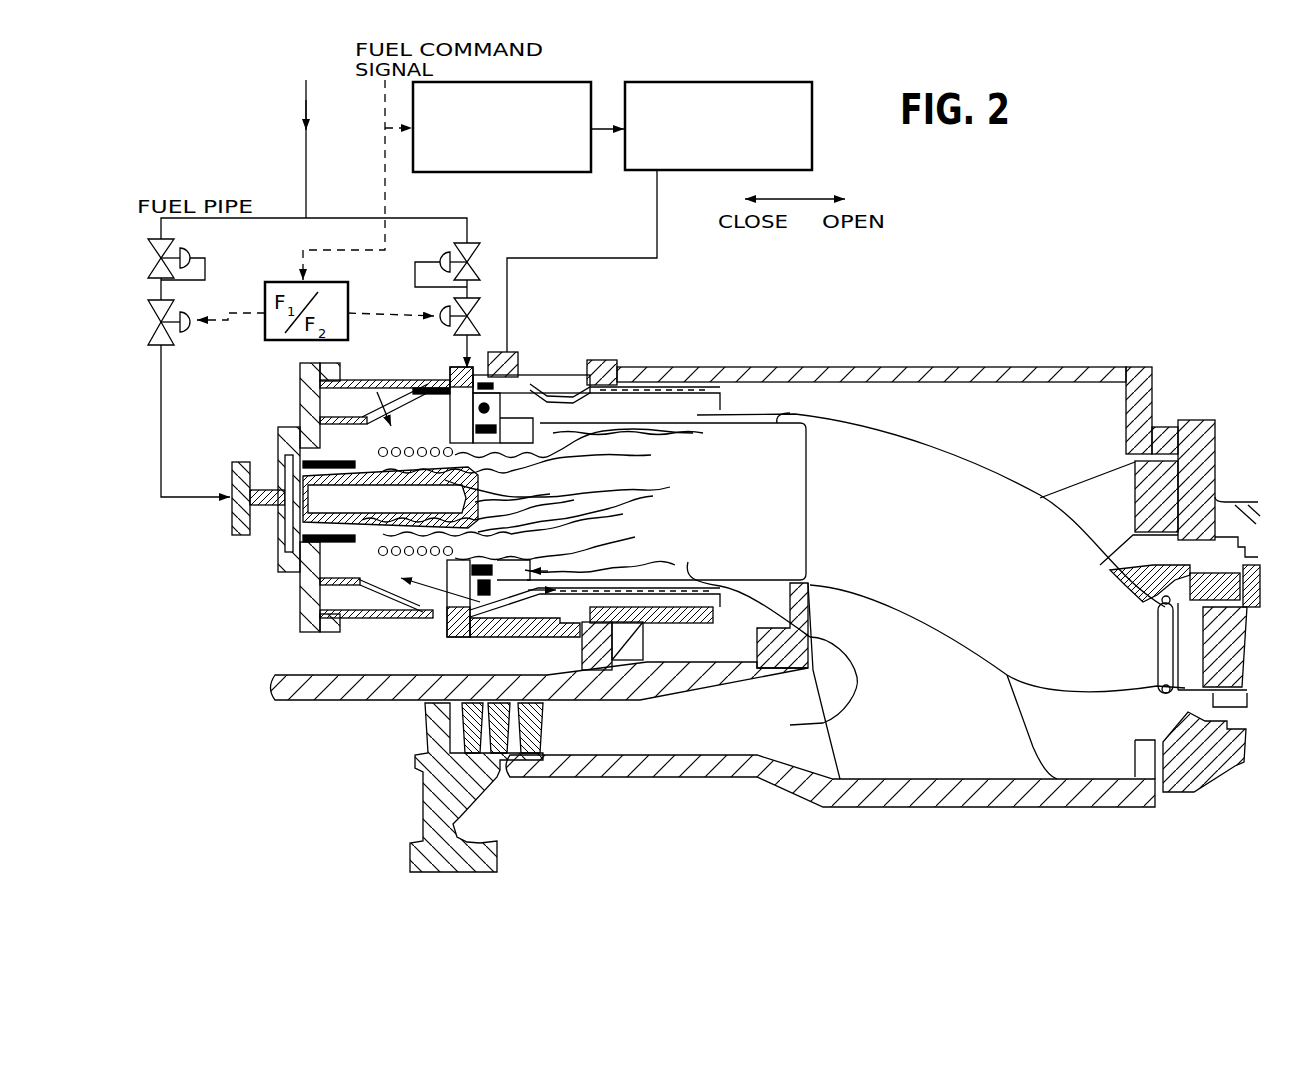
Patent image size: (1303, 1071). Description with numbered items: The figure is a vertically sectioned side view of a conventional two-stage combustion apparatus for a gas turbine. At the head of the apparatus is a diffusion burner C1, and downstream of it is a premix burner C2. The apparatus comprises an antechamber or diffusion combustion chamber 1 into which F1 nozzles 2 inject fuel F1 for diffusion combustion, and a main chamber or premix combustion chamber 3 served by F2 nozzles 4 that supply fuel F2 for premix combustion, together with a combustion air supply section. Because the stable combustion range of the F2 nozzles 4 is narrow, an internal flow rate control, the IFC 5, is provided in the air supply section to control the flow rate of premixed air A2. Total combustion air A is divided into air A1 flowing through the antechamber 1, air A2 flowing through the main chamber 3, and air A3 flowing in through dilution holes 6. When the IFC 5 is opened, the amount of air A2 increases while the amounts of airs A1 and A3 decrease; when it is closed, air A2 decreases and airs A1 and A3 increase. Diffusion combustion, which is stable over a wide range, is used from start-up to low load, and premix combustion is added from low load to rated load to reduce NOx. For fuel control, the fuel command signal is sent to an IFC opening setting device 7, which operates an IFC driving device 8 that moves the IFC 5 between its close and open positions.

The diffusion combustion chamber 1 is at (433, 548).
The F1 nozzles 2 is at (342, 618).
The premix combustion chamber 3 is at (667, 455).
The F2 nozzles 4 is at (437, 422).
The internal flow rate control (IFC) 5 is at (522, 372).
The dilution holes 6 is at (698, 420).
The IFC opening setting device 7 is at (487, 172).
The IFC driving device 8 is at (677, 172).
The total combustion air A is at (790, 725).
The air flowing through the antechamber A1 is at (421, 580).
The premixed air A2 is at (556, 574).
The dilution air A3 is at (748, 587).
The diffusion burner C1 is at (393, 555).
The premix burner C2 is at (625, 455).
The diffusion combustion fuel F1 is at (153, 322).
The premix combustion fuel F2 is at (472, 316).